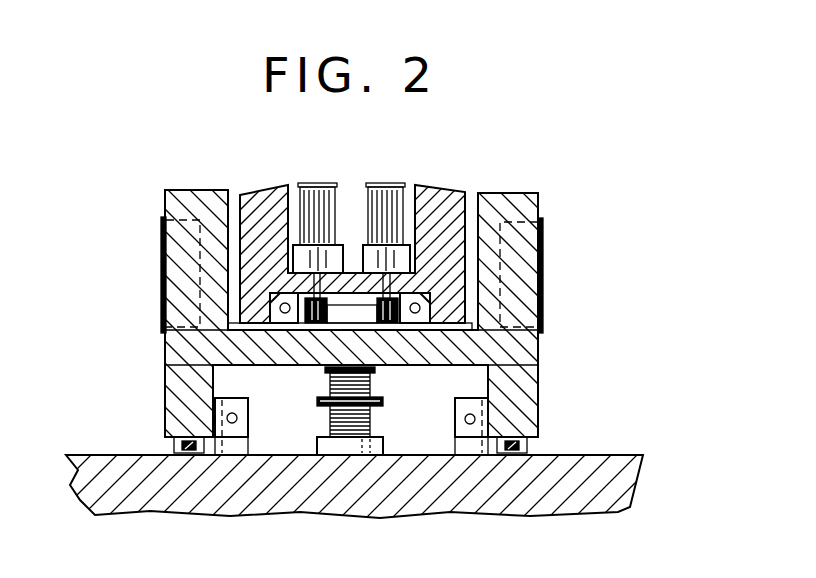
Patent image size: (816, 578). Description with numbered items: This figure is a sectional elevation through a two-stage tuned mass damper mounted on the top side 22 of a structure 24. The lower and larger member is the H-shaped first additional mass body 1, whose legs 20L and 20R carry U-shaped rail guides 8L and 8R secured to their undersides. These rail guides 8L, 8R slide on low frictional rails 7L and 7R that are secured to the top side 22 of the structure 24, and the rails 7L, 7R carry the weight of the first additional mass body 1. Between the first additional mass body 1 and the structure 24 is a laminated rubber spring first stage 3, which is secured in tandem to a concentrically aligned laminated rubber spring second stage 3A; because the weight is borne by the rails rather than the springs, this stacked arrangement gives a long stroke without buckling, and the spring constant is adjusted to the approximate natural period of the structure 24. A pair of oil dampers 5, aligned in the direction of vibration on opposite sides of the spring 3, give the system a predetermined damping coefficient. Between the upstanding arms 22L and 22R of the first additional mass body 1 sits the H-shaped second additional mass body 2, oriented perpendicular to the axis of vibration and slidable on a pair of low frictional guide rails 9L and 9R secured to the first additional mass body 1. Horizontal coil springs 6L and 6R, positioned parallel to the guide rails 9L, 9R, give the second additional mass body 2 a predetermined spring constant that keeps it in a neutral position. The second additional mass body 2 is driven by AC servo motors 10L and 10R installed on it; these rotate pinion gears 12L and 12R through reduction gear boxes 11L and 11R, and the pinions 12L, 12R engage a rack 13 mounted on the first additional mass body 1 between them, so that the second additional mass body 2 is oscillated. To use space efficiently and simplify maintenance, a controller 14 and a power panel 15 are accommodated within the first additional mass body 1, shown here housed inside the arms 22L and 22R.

The first additional mass body 1 is at (500, 200).
The second additional mass body 2 is at (432, 196).
The laminated rubber spring first stage 3 is at (369, 422).
The laminated rubber spring second stage 3A is at (335, 383).
The oil dampers 5 is at (233, 456).
The horizontal coil spring 6L is at (268, 307).
The horizontal coil spring 6R is at (432, 308).
The low frictional rail 7L is at (189, 456).
The low frictional rail 7R is at (530, 457).
The U-shaped rail guide 8L is at (174, 446).
The U-shaped rail guide 8R is at (527, 447).
The low frictional guide rail 9L is at (220, 341).
The low frictional guide rail 9R is at (470, 342).
The AC servo motor 10L is at (312, 185).
The AC servo motor 10R is at (384, 185).
The reduction gear box 11L is at (283, 237).
The reduction gear box 11R is at (414, 202).
The pinion gear 12L is at (311, 323).
The pinion gear 12R is at (398, 322).
The rack 13 is at (387, 322).
The controller 14 is at (160, 245).
The power panel 15 is at (545, 237).
The leg 20L is at (165, 381).
The leg 20R is at (537, 398).
The top side 22 is at (83, 453).
The arm 22L is at (172, 196).
The arm 22R is at (531, 210).
The structure 24 is at (365, 500).